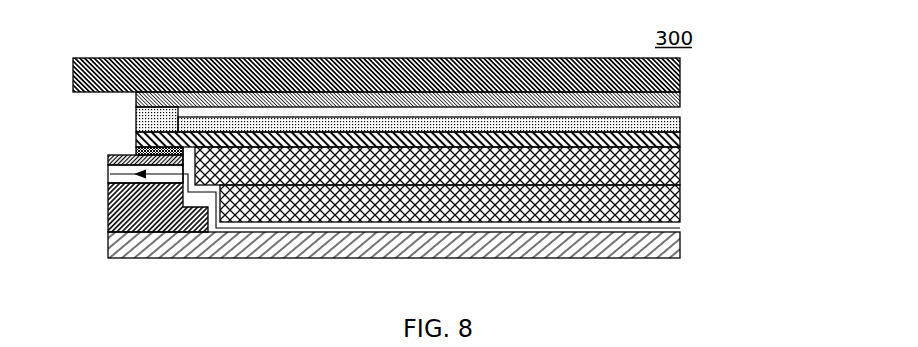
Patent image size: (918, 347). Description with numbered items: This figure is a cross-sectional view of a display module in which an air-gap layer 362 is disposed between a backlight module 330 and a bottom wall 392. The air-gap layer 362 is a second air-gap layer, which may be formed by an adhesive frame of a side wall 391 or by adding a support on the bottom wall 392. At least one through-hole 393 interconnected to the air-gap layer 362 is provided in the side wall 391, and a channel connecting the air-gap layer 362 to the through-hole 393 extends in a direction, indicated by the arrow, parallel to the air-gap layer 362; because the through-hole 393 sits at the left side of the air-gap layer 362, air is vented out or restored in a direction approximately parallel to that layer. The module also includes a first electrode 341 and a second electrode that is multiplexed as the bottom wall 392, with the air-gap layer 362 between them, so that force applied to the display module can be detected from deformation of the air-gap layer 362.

The first electrode 341 is at (682, 112).
The backlight module 330 is at (683, 170).
The second air-gap layer 362 is at (663, 226).
The bottom wall 392 is at (671, 248).
The through-hole 393 is at (108, 173).
The side wall 391 is at (108, 218).